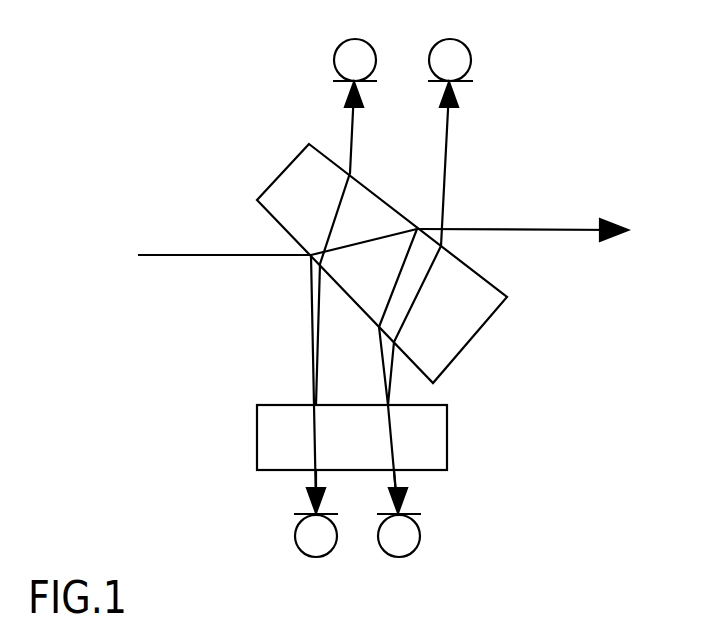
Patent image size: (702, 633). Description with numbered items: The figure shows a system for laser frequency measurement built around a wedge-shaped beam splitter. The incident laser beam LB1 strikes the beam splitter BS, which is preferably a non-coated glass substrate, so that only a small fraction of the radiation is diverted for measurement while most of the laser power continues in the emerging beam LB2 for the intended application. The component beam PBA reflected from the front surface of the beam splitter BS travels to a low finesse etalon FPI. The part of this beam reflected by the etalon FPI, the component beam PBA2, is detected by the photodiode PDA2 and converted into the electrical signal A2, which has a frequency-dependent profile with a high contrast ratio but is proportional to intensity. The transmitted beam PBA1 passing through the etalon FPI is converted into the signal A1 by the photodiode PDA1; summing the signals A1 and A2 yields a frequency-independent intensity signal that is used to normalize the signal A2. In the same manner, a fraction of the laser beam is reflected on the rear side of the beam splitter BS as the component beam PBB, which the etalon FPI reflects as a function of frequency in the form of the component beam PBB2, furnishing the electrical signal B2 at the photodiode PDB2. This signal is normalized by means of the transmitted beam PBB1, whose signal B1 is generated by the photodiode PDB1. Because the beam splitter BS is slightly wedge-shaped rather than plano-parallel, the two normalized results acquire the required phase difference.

The beam splitter BS is at (398, 263).
The low finesse etalon FPI is at (377, 437).
The incident laser beam LB1 is at (277, 265).
The emerging beam LB2 is at (522, 245).
The component beam reflected from the front surface PBA is at (284, 380).
The component beam reflected from the rear side PBB is at (372, 367).
The transmitted beam PBA1 is at (278, 491).
The transmitted beam PBB1 is at (434, 491).
The component beam reflected by the etalon PBA2 is at (373, 243).
The component beam reflected by the etalon PBB2 is at (455, 243).
The photodiode PDA1 is at (269, 554).
The photodiode PDB1 is at (437, 554).
The photodiode PDA2 is at (316, 43).
The photodiode PDB2 is at (491, 43).
The signal A1 is at (316, 554).
The signal B1 is at (399, 554).
The electrical signal A2 is at (355, 43).
The electrical signal B2 is at (450, 43).